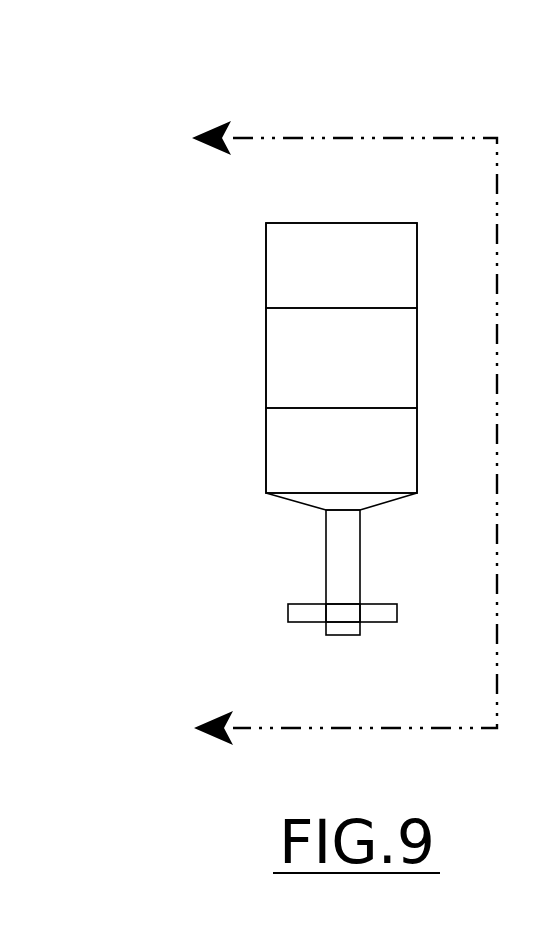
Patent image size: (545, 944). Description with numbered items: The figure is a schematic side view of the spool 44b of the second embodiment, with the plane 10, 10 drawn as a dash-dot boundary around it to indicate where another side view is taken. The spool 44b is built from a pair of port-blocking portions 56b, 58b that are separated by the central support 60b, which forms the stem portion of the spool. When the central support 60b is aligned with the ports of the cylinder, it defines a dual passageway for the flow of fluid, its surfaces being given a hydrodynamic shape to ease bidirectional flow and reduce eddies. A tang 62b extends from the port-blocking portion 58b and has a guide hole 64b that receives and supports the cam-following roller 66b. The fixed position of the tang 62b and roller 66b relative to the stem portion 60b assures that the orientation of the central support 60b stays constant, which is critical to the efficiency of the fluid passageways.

The plane 10— 10 is at (324, 433).
The spool 44b is at (243, 277).
The port-blocking portion 56b is at (388, 245).
The central support 60b is at (293, 335).
The port-blocking portion 58b is at (310, 447).
The tang 62b is at (350, 551).
The cam-following roller 66b is at (303, 613).
The guide hole 64b is at (355, 620).